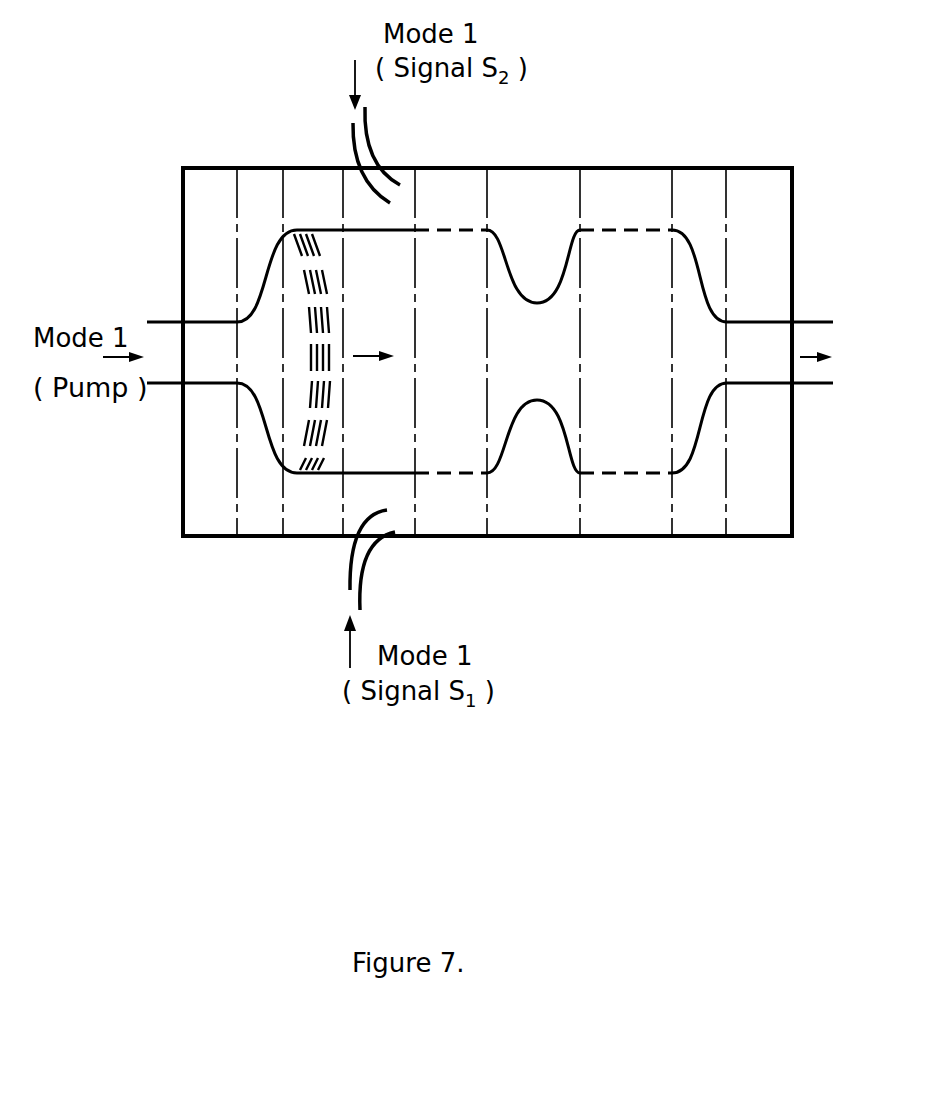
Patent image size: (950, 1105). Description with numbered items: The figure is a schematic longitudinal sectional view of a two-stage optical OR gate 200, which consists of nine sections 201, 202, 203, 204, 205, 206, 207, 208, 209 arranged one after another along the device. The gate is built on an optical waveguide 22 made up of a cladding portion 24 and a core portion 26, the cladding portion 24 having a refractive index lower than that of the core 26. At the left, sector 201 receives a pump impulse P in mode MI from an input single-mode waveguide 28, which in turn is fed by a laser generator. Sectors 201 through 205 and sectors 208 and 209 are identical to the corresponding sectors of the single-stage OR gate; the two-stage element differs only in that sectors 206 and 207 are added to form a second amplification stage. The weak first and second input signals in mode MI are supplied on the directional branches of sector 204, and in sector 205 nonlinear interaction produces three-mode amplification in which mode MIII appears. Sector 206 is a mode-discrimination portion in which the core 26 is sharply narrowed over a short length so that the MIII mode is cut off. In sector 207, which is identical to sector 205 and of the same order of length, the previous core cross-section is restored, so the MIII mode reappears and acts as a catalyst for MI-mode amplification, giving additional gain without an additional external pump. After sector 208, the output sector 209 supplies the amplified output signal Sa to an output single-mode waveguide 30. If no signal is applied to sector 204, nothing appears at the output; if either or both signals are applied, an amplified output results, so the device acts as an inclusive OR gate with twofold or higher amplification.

The optical waveguide 22 is at (202, 155).
The cladding portion 24 is at (626, 208).
The core portion 26 is at (626, 368).
The input single-mode waveguide 28 is at (143, 352).
The output single-mode waveguide 30 is at (832, 349).
The two-stage OR gate 200 is at (666, 548).
The sector 201 is at (210, 371).
The sector 202 is at (267, 371).
The sector 203 is at (318, 371).
The sector 204 is at (380, 371).
The sector 205 is at (451, 371).
The mode-discrimination sector 206 is at (533, 371).
The sector 207 is at (626, 371).
The sector 208 is at (699, 371).
The output sector 209 is at (759, 448).